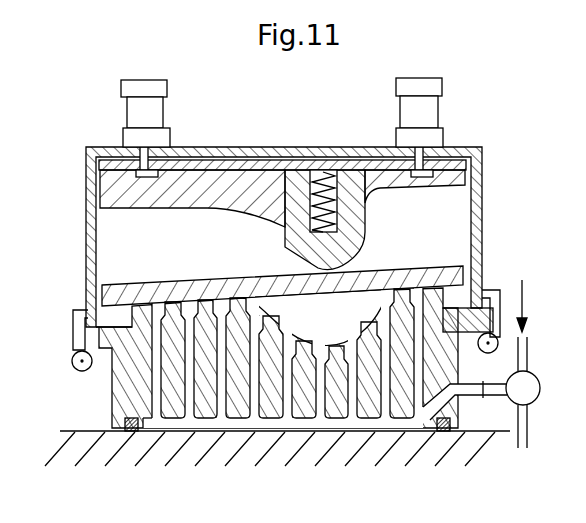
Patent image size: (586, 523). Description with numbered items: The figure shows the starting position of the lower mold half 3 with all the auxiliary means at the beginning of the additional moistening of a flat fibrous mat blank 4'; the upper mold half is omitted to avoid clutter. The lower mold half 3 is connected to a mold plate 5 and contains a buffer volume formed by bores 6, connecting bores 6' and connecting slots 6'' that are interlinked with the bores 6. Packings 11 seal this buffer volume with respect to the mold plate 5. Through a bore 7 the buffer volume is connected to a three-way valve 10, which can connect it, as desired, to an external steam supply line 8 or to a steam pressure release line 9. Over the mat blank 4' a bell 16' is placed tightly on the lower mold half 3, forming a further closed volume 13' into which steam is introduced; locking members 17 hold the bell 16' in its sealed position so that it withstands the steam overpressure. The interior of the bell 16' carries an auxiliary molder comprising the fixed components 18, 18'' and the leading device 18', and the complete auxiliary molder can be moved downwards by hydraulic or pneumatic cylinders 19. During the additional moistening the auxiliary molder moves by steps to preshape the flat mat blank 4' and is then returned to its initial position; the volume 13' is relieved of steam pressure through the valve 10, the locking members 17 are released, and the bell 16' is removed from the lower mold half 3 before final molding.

The lower mold half 3 is at (108, 396).
The flat fibrous mat blank 4' is at (282, 267).
The mold plate 5 is at (64, 432).
The bores 6 is at (287, 399).
The connecting bores 6' is at (146, 280).
The connecting slots 6'' is at (322, 445).
The bore 7 is at (465, 407).
The external steam supply line 8 is at (528, 356).
The steam pressure release line 9 is at (530, 435).
The three-way valve 10 is at (537, 389).
The packings 11 is at (131, 432).
The further closed volume 13' is at (281, 288).
The bell 16' is at (272, 239).
The locking members 17 is at (76, 338).
The fixed component of auxiliary molder 18 is at (192, 165).
The leading device 18' is at (322, 187).
The fixed component of auxiliary molder 18'' is at (409, 153).
The hydraulic or pneumatic cylinders 19 is at (126, 86).